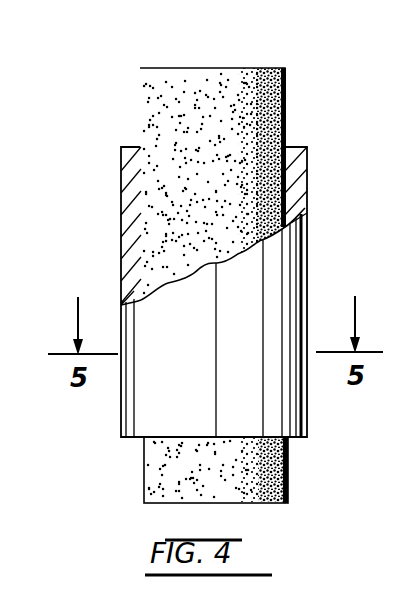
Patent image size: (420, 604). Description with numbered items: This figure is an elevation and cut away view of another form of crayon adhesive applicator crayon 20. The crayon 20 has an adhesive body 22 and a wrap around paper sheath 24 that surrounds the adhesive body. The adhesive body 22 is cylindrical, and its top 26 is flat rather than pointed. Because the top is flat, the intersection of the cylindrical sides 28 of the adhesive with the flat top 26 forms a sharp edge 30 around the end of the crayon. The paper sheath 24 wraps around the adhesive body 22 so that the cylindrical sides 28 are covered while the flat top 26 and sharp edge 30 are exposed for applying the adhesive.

The crayon adhesive applicator crayon 20 is at (112, 105).
The adhesive body 22 is at (288, 96).
The wrap around paper sheath 24 is at (275, 273).
The flat top 26 is at (217, 68).
The cylindrical sides 28 is at (288, 124).
The sharp edge 30 is at (287, 68).